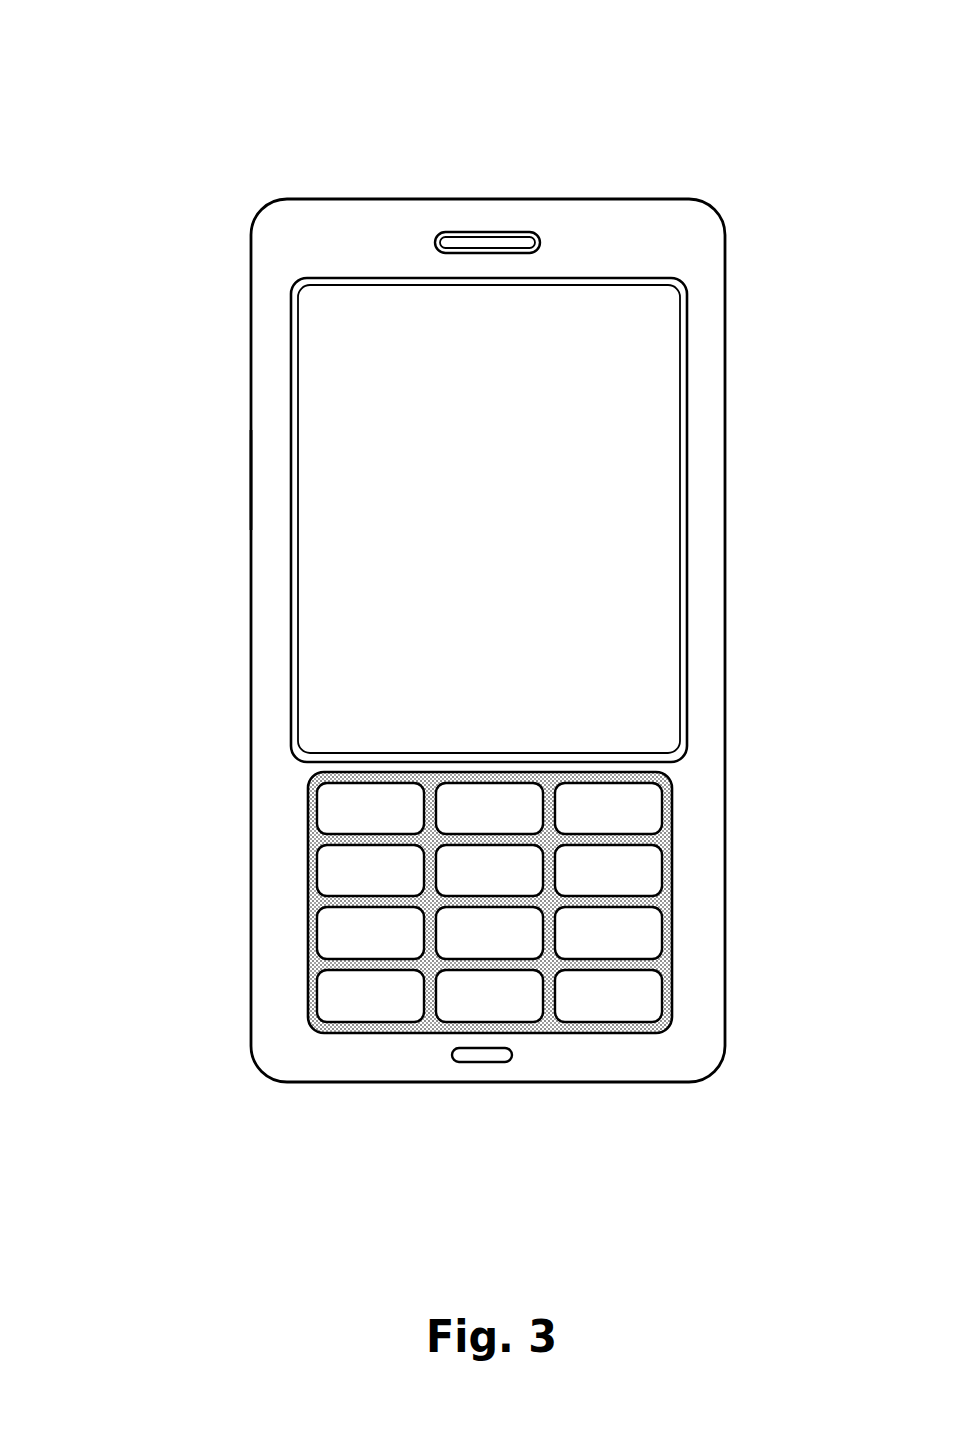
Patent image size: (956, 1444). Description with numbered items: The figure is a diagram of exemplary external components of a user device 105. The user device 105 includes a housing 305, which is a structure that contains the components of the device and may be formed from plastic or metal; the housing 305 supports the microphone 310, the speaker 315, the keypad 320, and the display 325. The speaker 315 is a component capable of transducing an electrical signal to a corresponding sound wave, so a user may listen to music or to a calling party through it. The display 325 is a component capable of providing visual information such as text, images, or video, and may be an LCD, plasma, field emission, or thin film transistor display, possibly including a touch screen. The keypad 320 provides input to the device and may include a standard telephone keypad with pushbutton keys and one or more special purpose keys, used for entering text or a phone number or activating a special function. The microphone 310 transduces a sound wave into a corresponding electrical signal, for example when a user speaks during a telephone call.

The user device 105 is at (262, 64).
The housing 305 is at (251, 480).
The microphone 310 is at (477, 1063).
The speaker 315 is at (450, 232).
The keypad 320 is at (732, 773).
The display 325 is at (623, 280).